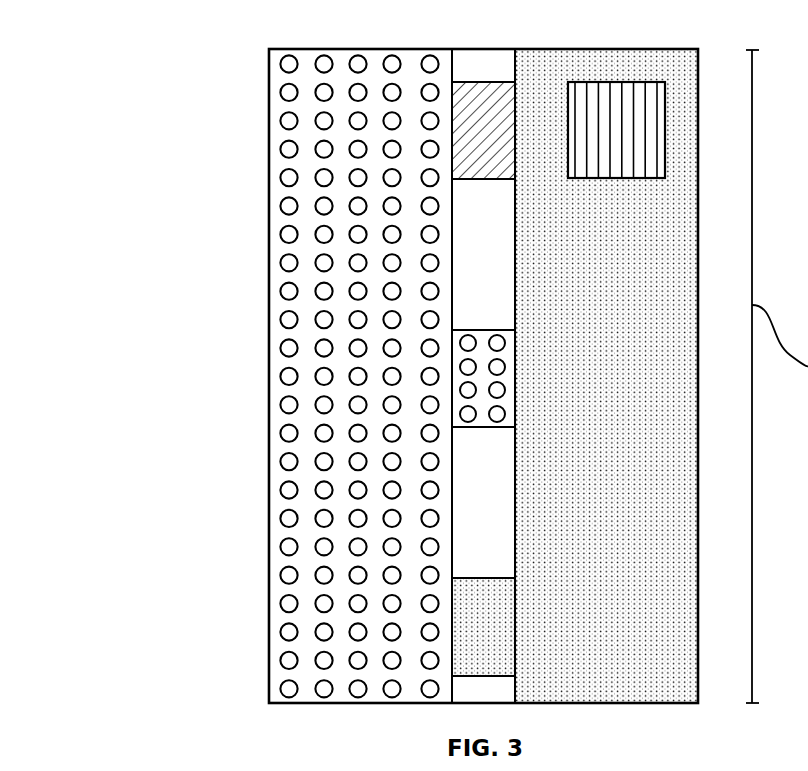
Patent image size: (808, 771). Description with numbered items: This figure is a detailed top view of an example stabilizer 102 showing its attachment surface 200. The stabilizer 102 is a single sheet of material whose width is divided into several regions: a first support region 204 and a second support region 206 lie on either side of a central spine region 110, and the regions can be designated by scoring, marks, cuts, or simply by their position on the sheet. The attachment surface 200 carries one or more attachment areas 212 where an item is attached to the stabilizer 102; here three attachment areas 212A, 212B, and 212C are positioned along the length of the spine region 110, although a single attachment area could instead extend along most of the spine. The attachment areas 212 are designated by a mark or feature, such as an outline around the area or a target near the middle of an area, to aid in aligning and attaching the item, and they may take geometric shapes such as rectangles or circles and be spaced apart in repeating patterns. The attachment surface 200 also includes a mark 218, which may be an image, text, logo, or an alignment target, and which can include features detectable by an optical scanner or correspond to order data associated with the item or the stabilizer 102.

The stabilizer 102 is at (216, 92).
The spine region 110 is at (470, 74).
The attachment surface 200 is at (700, 80).
The first support region 204 is at (672, 685).
The second support region 206 is at (278, 362).
The attachment areas 212 is at (280, 628).
The attachment area 212A is at (517, 167).
The attachment area 212B is at (515, 392).
The attachment area 212C is at (515, 585).
The marks 218 is at (597, 81).